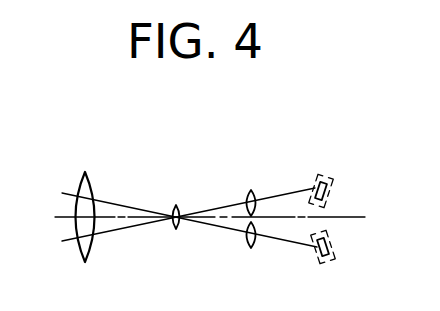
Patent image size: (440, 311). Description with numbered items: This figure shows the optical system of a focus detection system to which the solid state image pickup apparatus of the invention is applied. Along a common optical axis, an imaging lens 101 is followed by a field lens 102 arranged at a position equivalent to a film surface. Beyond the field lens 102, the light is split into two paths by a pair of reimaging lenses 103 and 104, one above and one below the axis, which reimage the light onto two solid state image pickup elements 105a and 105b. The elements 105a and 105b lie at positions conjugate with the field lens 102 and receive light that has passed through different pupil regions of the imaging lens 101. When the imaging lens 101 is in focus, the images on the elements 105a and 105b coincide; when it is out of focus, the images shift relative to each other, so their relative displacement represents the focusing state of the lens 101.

The imaging lens 101 is at (80, 182).
The field lens 102 is at (177, 205).
The reimaging lens 103 is at (253, 190).
The reimaging lens 104 is at (252, 248).
The solid state image pickup element 105a is at (332, 185).
The solid state image pickup element 105b is at (332, 247).